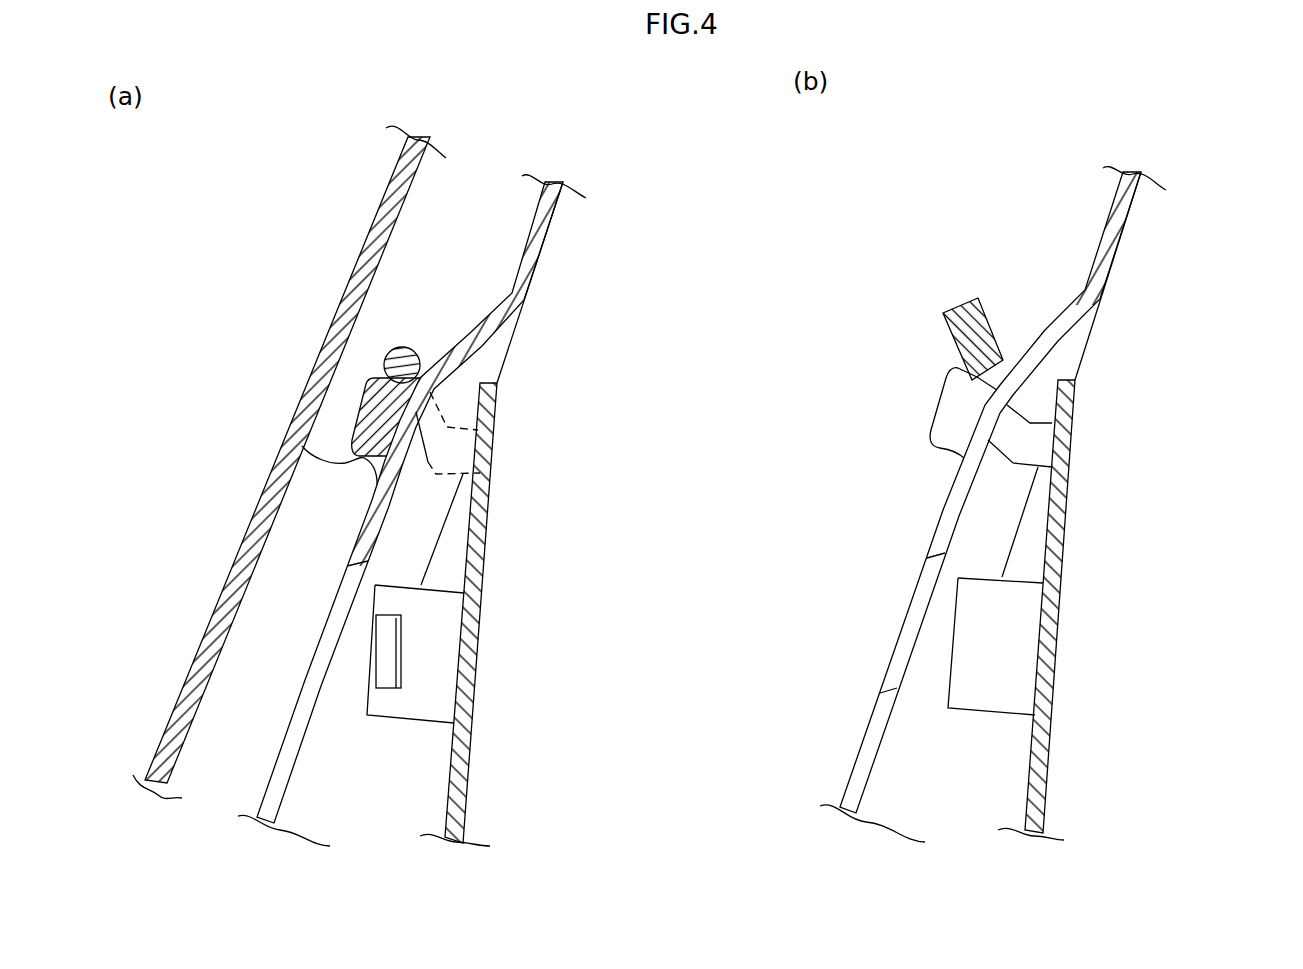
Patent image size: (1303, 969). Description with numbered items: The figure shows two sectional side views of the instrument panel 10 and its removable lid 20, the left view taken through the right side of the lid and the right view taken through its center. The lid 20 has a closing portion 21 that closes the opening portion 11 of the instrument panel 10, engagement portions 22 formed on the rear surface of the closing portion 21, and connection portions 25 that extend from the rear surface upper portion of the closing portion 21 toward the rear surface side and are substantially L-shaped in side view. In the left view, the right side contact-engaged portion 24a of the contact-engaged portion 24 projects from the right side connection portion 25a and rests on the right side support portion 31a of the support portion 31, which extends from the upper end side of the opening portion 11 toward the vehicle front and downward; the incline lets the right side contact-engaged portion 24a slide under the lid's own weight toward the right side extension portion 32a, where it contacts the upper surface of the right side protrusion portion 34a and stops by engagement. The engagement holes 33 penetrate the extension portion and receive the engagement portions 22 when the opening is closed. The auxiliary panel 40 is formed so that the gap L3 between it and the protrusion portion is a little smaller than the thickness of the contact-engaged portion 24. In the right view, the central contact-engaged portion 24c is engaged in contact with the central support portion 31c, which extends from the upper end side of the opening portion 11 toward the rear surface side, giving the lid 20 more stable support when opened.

The instrument panel 10 is at (538, 268).
The opening portion 11 is at (411, 545).
The lid 20 is at (532, 470).
The closing portion 21 is at (477, 668).
The engagement portions 22 is at (403, 723).
The contact-engaged portion 24 is at (818, 338).
The right side contact-engaged portion 24a is at (403, 350).
The central contact-engaged portion 24c is at (982, 302).
The connection portions 25 is at (500, 413).
The right side connection portion 25a is at (1016, 485).
The support portion 31 is at (844, 342).
The right side support portion 31a is at (433, 367).
The central support portion 31c is at (1013, 347).
The right side extension portion 32a is at (362, 508).
The engagement holes 33 is at (305, 657).
The right side protrusion portion 34a is at (303, 450).
The auxiliary panel 40 is at (362, 262).
The gap L3 is at (346, 410).